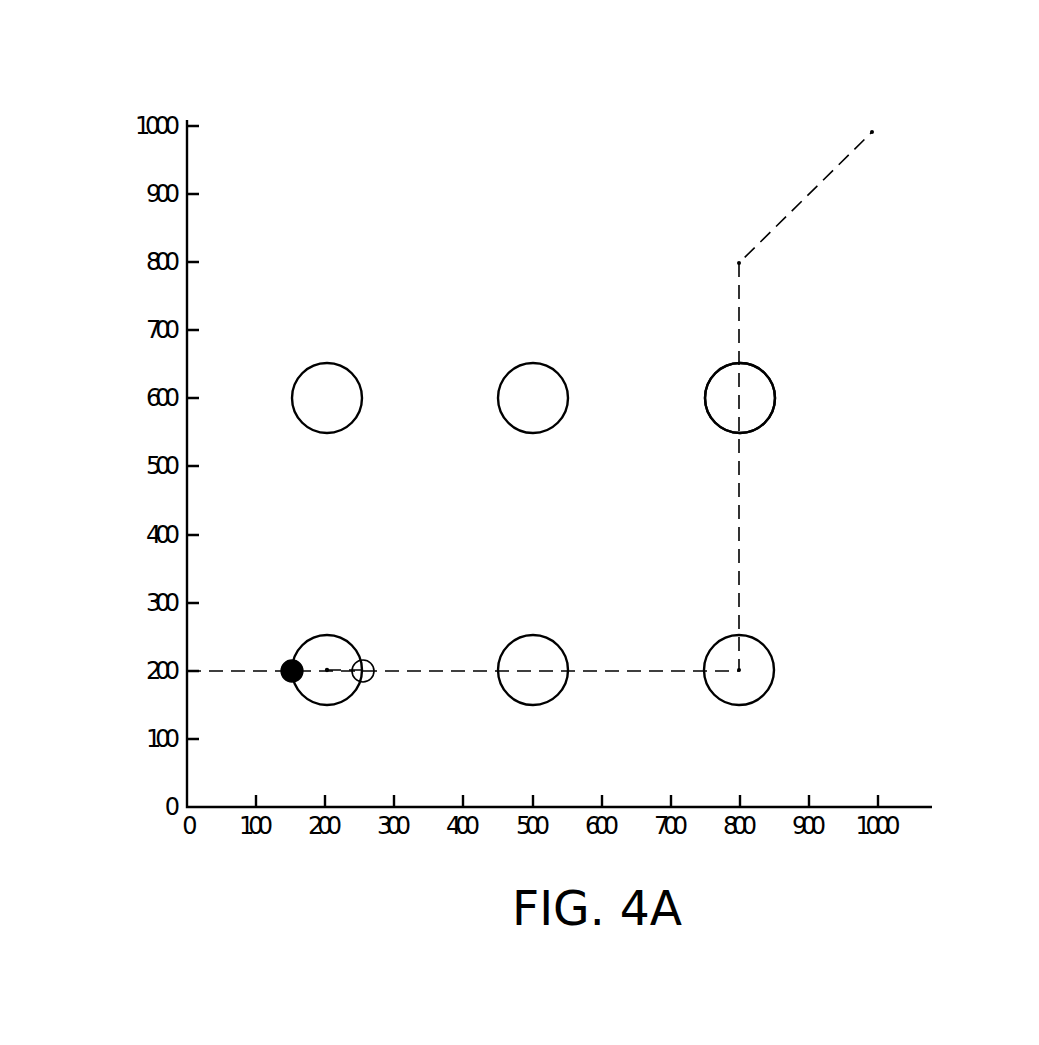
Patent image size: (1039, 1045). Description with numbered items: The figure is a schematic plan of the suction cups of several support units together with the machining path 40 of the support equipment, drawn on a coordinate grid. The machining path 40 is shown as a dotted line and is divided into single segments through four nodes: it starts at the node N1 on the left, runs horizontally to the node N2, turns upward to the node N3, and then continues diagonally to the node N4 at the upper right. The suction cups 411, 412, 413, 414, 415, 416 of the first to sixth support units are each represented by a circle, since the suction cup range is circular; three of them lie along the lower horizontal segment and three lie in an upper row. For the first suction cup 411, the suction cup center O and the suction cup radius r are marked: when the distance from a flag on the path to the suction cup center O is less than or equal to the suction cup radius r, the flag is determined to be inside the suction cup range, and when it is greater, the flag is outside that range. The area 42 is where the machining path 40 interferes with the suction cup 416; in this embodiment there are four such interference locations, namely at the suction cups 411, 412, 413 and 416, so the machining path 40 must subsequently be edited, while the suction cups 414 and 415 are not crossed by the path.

The machining path 40 is at (820, 185).
The interference area 42 is at (740, 402).
The suction cup of the first support unit 411 is at (347, 702).
The suction cup of the second support unit 412 is at (565, 685).
The suction cup of the third support unit 413 is at (775, 672).
The suction cup of the fourth support unit 414 is at (292, 408).
The suction cup of the fifth support unit 415 is at (498, 408).
The suction cup of the sixth support unit 416 is at (705, 411).
The first path node N1 is at (187, 672).
The second path node N2 is at (739, 670).
The third path node N3 is at (740, 268).
The fourth path node N4 is at (872, 132).
The suction cup center O is at (331, 677).
The suction cup radius r is at (335, 664).